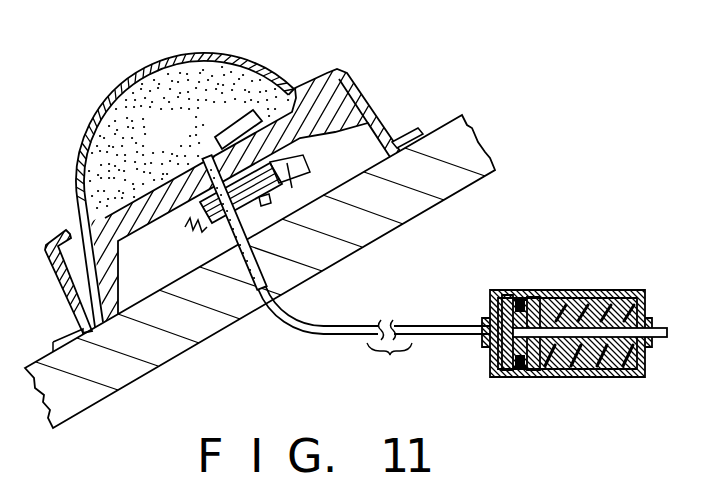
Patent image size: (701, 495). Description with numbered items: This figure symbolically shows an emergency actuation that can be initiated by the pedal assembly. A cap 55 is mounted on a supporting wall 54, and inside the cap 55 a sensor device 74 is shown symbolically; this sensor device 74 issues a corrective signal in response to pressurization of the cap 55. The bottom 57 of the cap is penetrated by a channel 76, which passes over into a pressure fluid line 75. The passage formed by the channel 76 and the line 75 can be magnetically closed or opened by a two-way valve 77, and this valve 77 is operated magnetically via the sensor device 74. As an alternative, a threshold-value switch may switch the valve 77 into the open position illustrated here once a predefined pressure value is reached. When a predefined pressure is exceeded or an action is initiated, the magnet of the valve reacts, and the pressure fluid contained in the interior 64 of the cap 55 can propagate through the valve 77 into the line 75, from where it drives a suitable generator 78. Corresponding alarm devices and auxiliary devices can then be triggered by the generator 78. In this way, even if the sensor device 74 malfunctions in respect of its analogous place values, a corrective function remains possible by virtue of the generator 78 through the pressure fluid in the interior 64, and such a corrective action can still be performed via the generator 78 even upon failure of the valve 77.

The wall plate 54 is at (416, 204).
The cap 55 is at (162, 62).
The bottom of the cap 57 is at (90, 190).
The interior 64 is at (110, 150).
The sensor device 74 is at (230, 117).
The pressure fluid line 75 is at (312, 334).
The channel 76 is at (202, 163).
The two-way valve 77 is at (296, 221).
The generator 78 is at (578, 288).